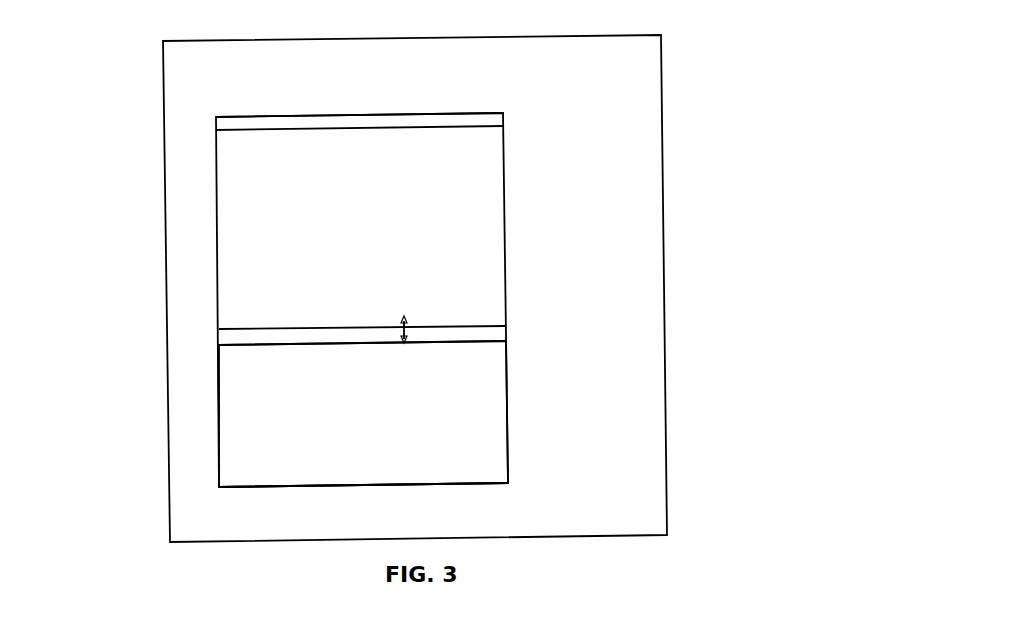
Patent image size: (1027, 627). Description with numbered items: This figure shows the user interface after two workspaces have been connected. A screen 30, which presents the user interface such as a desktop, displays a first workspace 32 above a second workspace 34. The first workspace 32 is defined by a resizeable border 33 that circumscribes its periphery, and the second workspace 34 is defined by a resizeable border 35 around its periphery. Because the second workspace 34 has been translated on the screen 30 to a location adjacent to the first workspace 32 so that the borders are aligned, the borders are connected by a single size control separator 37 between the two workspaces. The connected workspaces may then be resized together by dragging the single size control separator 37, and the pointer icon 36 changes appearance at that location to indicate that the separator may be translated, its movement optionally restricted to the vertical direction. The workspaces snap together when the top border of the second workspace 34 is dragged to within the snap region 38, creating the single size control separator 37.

The screen 30 is at (661, 73).
The first workspace 32 is at (512, 203).
The resizeable border 33 is at (506, 148).
The second workspace 34 is at (516, 404).
The resizeable border 35 is at (508, 444).
The pointer icon 36 is at (406, 318).
The single size control separator 37 is at (496, 327).
The snap region 38 is at (219, 369).